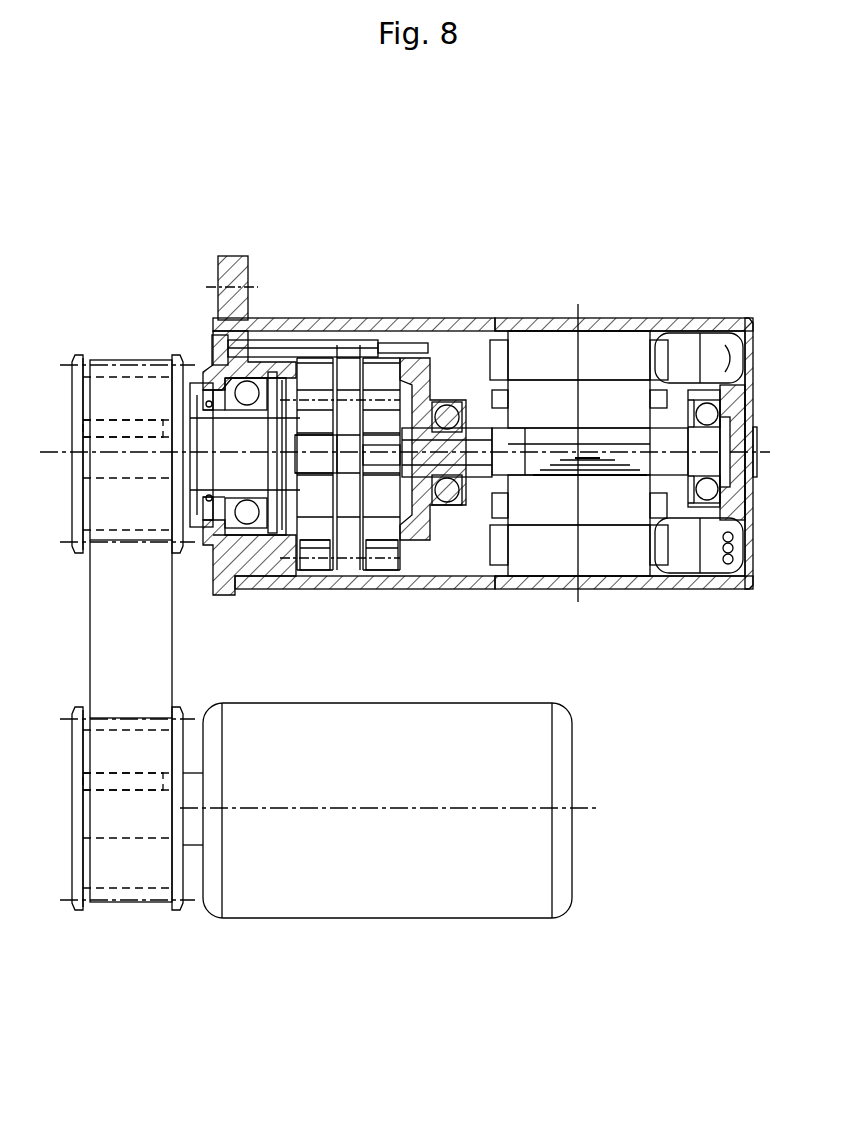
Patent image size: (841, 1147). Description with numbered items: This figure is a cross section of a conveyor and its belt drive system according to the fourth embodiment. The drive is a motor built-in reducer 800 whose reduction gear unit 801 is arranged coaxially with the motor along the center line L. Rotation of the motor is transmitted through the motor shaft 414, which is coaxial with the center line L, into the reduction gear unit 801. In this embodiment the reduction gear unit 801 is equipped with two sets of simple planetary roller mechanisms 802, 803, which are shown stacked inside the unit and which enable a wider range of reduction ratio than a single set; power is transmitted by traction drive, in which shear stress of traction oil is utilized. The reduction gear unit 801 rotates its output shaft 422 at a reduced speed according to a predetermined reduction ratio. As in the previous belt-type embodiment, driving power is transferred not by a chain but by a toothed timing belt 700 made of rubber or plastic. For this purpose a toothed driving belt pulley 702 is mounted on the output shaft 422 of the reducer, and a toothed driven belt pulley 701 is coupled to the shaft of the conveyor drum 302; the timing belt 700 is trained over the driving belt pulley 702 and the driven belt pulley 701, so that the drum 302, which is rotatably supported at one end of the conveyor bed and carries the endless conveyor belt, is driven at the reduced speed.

The reduction gear unit 801 is at (411, 292).
The motor built-in reducer 800 is at (621, 295).
The motor shaft 414 is at (545, 462).
The simple planetary roller mechanism 802 is at (320, 510).
The simple planetary roller mechanism 803 is at (383, 515).
The toothed driving belt pulley 702 is at (78, 405).
The center line L is at (58, 452).
The output shaft 422 is at (128, 482).
The timing belt 700 is at (156, 657).
The toothed driven belt pulley 701 is at (78, 852).
The drum 302 is at (388, 905).